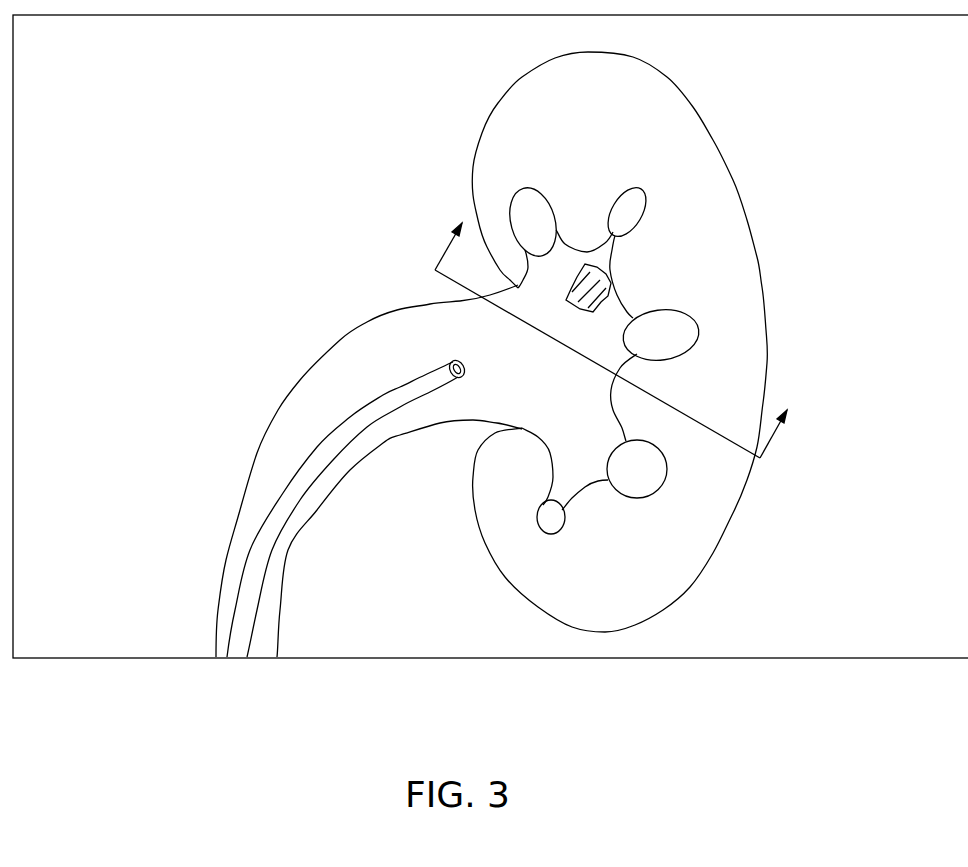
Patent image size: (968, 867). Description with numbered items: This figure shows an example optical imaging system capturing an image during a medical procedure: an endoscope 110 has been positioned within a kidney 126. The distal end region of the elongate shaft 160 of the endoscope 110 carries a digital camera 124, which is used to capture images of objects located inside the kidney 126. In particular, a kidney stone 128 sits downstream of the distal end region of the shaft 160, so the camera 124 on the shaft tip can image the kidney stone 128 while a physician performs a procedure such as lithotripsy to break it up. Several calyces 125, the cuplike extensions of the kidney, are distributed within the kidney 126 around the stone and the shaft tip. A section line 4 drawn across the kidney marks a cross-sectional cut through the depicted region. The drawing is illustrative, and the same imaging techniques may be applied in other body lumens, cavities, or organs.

The endoscope 110 is at (298, 448).
The digital camera 124 is at (458, 362).
The renal calyces 125 is at (640, 193).
The kidney 126 is at (686, 80).
The kidney stone 128 is at (607, 287).
The elongate shaft 160 is at (423, 389).
The section line 4- 4 is at (617, 332).